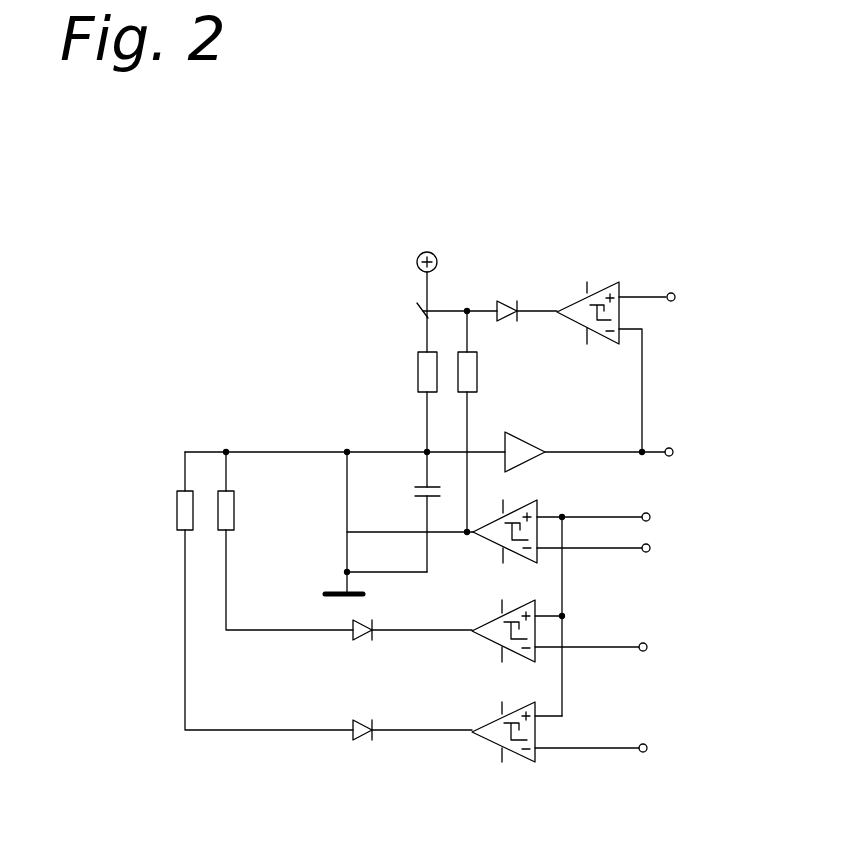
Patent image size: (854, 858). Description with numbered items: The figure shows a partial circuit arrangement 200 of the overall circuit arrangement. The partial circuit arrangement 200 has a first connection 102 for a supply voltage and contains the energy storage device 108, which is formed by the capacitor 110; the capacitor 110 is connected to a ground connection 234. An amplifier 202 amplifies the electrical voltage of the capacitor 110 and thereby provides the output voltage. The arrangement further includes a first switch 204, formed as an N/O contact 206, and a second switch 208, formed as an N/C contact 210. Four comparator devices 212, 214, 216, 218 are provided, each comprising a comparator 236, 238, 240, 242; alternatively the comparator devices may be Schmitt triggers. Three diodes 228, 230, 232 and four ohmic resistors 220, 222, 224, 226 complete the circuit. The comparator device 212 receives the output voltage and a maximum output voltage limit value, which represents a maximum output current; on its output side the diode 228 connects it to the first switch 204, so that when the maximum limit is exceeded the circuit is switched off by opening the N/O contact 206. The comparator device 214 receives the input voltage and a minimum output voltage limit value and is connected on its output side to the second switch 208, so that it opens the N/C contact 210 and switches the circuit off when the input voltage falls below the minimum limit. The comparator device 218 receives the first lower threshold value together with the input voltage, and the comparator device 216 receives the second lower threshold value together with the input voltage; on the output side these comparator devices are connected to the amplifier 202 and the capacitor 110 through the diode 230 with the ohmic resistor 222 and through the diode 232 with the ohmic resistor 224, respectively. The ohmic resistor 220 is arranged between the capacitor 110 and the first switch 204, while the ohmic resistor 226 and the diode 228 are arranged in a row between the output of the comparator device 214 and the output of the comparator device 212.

The partial circuit arrangement 200 is at (272, 265).
The first connection 102 is at (434, 252).
The first switch 204 is at (421, 273).
The N/O contact 206 is at (423, 305).
The ohmic resistor 220 is at (418, 350).
The ohmic resistor 226 is at (478, 353).
The diode 228 is at (508, 303).
The comparator device 212 is at (623, 323).
The comparator 236 is at (620, 281).
The amplifier 202 is at (523, 435).
The energy storage device 108 is at (396, 474).
The capacitor 110 is at (415, 487).
The second switch 208 is at (351, 523).
The N/C contact 210 is at (347, 532).
The ground connection 234 is at (327, 594).
The ohmic resistor 222 is at (178, 500).
The ohmic resistor 224 is at (233, 523).
The diode 232 is at (360, 642).
The diode 230 is at (360, 742).
The comparator device 214 is at (545, 608).
The comparator 238 is at (491, 540).
The comparator device 216 is at (543, 661).
The comparator 240 is at (490, 640).
The comparator device 218 is at (543, 773).
The comparator 242 is at (490, 740).